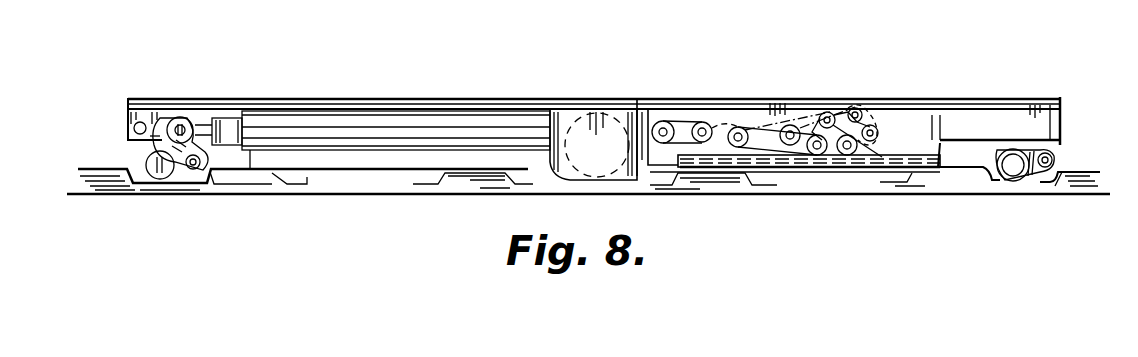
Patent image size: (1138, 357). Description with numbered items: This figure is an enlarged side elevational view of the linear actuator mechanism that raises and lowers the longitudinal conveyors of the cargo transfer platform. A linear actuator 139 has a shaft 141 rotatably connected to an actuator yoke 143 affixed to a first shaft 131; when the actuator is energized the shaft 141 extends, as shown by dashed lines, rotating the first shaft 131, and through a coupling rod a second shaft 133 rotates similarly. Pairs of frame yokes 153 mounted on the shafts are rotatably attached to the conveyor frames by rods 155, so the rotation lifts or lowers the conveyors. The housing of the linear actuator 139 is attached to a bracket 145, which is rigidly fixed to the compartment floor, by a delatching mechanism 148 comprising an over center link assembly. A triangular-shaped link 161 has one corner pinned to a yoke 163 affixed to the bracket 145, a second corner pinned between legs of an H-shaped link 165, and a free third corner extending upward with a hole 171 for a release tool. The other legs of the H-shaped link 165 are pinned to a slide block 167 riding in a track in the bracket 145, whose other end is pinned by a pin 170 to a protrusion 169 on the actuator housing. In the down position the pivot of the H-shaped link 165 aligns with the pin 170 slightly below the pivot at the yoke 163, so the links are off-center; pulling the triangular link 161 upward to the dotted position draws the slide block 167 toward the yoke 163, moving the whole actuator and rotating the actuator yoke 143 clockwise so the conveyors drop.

The first shaft 131 is at (157, 173).
The second shaft 133 is at (1012, 174).
The linear actuator 139 is at (473, 122).
The shaft 141 is at (198, 128).
The actuator yoke 143 is at (174, 142).
The bracket 145 is at (882, 158).
The delatching mechanism 148 is at (729, 108).
The frame yokes 153 is at (194, 170).
The rods 155 is at (1056, 158).
The triangular-shaped link 161 is at (838, 112).
The yoke 163 is at (858, 152).
The H-shaped link 165 is at (759, 124).
The slide block 167 is at (688, 121).
The protrusion 169 is at (646, 120).
The pin 170 is at (700, 126).
The hole 171 is at (827, 112).